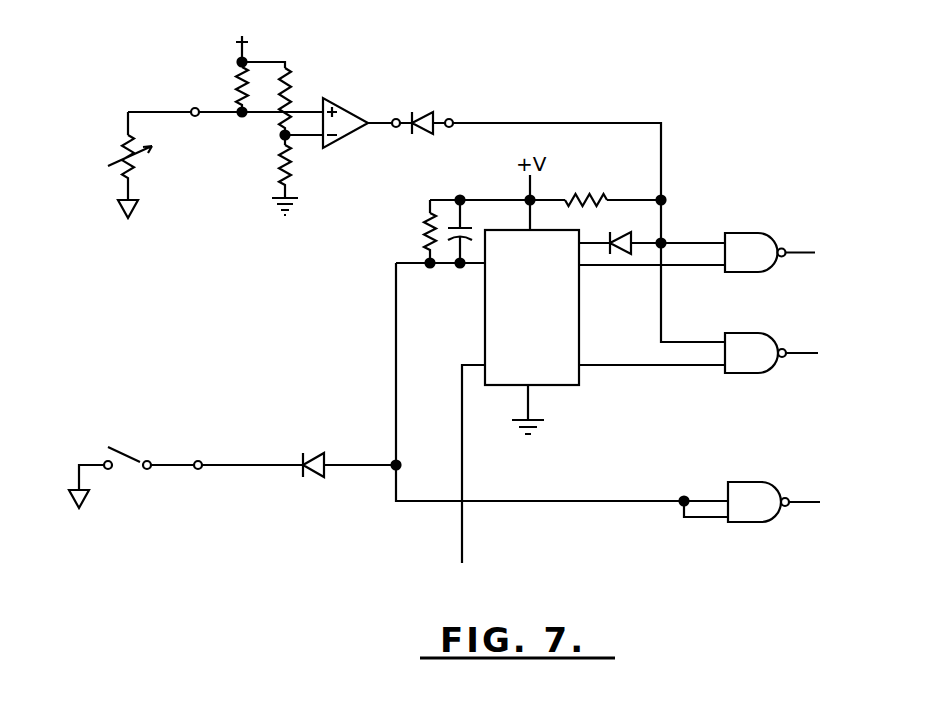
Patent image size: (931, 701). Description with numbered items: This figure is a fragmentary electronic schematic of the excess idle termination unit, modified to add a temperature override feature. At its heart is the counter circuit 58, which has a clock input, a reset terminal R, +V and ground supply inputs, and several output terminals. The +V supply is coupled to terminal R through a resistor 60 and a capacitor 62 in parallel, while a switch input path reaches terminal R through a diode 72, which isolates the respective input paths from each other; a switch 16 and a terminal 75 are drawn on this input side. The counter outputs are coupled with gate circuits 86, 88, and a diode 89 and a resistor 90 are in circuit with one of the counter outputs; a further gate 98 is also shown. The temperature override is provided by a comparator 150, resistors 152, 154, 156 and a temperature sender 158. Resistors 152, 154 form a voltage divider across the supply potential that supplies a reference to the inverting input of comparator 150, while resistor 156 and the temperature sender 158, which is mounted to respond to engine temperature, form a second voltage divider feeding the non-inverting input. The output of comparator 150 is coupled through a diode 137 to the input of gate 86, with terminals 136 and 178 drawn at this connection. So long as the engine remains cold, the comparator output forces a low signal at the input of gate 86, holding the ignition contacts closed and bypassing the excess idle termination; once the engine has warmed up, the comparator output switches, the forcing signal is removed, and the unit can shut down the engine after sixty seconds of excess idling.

The switch 16 is at (125, 452).
The counter circuit 58 is at (580, 386).
The resistor 60 is at (423, 238).
The capacitor 62 is at (450, 222).
The diode 72 is at (318, 477).
The terminal 75 is at (196, 470).
The gate circuit 86 is at (738, 240).
The gate circuit 88 is at (736, 341).
The diode 89 is at (628, 240).
The resistor 90 is at (585, 196).
The NAND gate 98 is at (733, 481).
The internal terminal 136 is at (397, 117).
The diode 137 is at (428, 113).
The terminal 178 is at (452, 116).
The comparator 150 is at (335, 100).
The resistor 152 is at (288, 84).
The resistor 154 is at (290, 158).
The resistor 156 is at (236, 90).
The temperature sender 158 is at (133, 165).